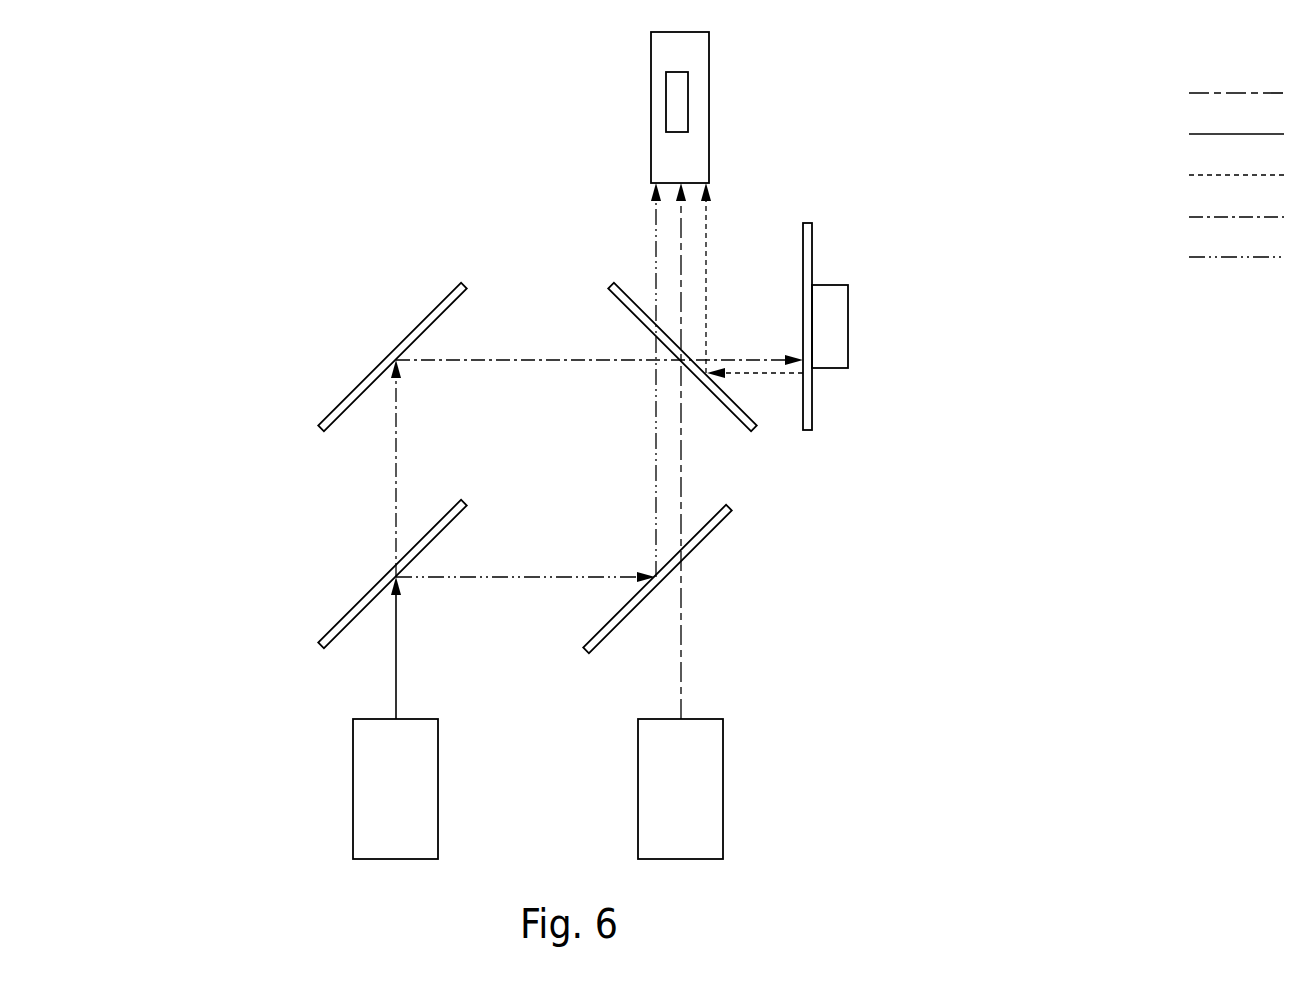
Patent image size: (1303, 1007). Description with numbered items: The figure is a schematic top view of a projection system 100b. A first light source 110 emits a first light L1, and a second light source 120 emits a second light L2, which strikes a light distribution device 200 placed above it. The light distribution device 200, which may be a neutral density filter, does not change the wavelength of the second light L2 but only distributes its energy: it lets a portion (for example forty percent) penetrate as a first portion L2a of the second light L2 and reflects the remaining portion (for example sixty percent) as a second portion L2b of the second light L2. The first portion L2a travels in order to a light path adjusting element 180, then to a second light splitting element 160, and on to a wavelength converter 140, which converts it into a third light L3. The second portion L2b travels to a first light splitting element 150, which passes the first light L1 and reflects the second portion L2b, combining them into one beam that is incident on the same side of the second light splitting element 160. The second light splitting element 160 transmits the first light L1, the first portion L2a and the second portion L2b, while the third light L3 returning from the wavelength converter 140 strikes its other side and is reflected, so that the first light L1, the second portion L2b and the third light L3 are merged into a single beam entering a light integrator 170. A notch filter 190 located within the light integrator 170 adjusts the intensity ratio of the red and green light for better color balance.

The projection system 100b is at (247, 60).
The first light source 110 is at (717, 792).
The second light source 120 is at (432, 792).
The wavelength converter 140 is at (842, 320).
The first light splitting element 150 is at (717, 527).
The second light splitting element 160 is at (634, 318).
The light integrator 170 is at (697, 113).
The light path adjusting element 180 is at (430, 311).
The notch filter 190 is at (667, 100).
The light distribution device 200 is at (355, 607).
The first light L1 is at (683, 640).
The second light L2 is at (398, 670).
The third light L3 is at (771, 375).
The first portion of the second light L2a is at (395, 480).
The second portion of the second light L2b is at (553, 577).